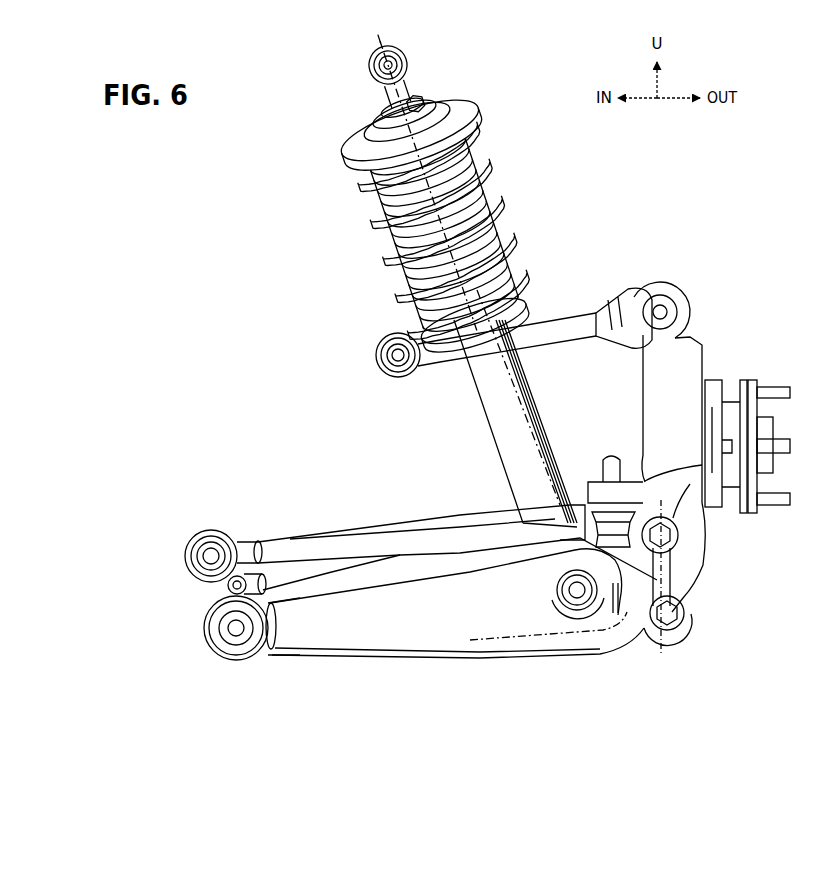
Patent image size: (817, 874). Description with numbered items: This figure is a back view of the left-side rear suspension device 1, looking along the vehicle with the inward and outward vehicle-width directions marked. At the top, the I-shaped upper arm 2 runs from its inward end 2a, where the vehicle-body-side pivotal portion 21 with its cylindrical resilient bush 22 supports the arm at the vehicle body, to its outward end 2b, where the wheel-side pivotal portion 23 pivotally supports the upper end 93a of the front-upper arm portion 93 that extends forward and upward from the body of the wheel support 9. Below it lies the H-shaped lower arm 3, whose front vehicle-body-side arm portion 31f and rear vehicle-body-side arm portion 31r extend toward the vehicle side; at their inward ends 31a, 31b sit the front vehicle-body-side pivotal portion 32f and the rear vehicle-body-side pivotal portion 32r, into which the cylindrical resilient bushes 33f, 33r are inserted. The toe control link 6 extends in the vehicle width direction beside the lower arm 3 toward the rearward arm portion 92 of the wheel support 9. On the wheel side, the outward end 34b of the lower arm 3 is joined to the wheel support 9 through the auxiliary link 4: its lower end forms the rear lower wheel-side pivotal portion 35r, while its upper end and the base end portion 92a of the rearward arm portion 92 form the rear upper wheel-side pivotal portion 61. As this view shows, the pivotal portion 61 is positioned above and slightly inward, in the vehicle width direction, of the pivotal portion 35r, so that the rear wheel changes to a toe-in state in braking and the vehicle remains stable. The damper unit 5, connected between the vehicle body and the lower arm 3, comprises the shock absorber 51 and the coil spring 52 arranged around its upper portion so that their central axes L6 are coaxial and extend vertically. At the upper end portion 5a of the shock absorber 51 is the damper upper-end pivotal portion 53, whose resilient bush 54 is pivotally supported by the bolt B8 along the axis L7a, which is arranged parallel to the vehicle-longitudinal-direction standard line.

The rear suspension device 1 is at (620, 212).
The upper arm 2 is at (568, 313).
The inward end of the upper arm 2a is at (380, 370).
The outward end of the upper arm 2b is at (647, 297).
The lower arm 3 is at (460, 662).
The auxiliary link 4 is at (657, 579).
The damper unit 5 is at (521, 196).
The upper end portion of the shock absorber 5a is at (374, 74).
The toe control link 6 is at (414, 524).
The wheel support 9 is at (640, 399).
The vehicle-body-side pivotal portion 21 is at (384, 341).
The cylindrical resilient bush 22 is at (404, 378).
The wheel-side pivotal portion 23 is at (692, 295).
The inward end of the front vehicle-body-side arm portion 31a is at (230, 591).
The inward end of the rear vehicle-body-side arm portion 31b is at (206, 626).
The front vehicle-body-side arm portion 31f is at (378, 522).
The rear vehicle-body-side arm portion 31r is at (271, 657).
The front vehicle-body-side pivotal portion 32f is at (198, 586).
The rear vehicle-body-side pivotal portion 32r is at (213, 649).
The cylindrical resilient bush 33f is at (258, 547).
The cylindrical resilient bush 33r is at (240, 653).
The outward end of the rear wheel-side arm portion 34b is at (653, 641).
The rear lower wheel-side pivotal portion 35r is at (686, 627).
The shock absorber 51 is at (540, 408).
The coil spring 52 is at (492, 177).
The damper upper-end pivotal portion 53 is at (372, 58).
The resilient bush 54 is at (400, 59).
The rear upper wheel-side pivotal portion 61 is at (683, 542).
The rearward arm portion 92 is at (705, 508).
The base end portion of the rearward arm portion 92a is at (676, 538).
The front-upper arm portion 93 is at (703, 341).
The upper end of the front-upper arm portion 93a is at (666, 289).
The bolt B8 is at (562, 592).
The central axis L6 is at (512, 410).
The axis L7a is at (406, 70).